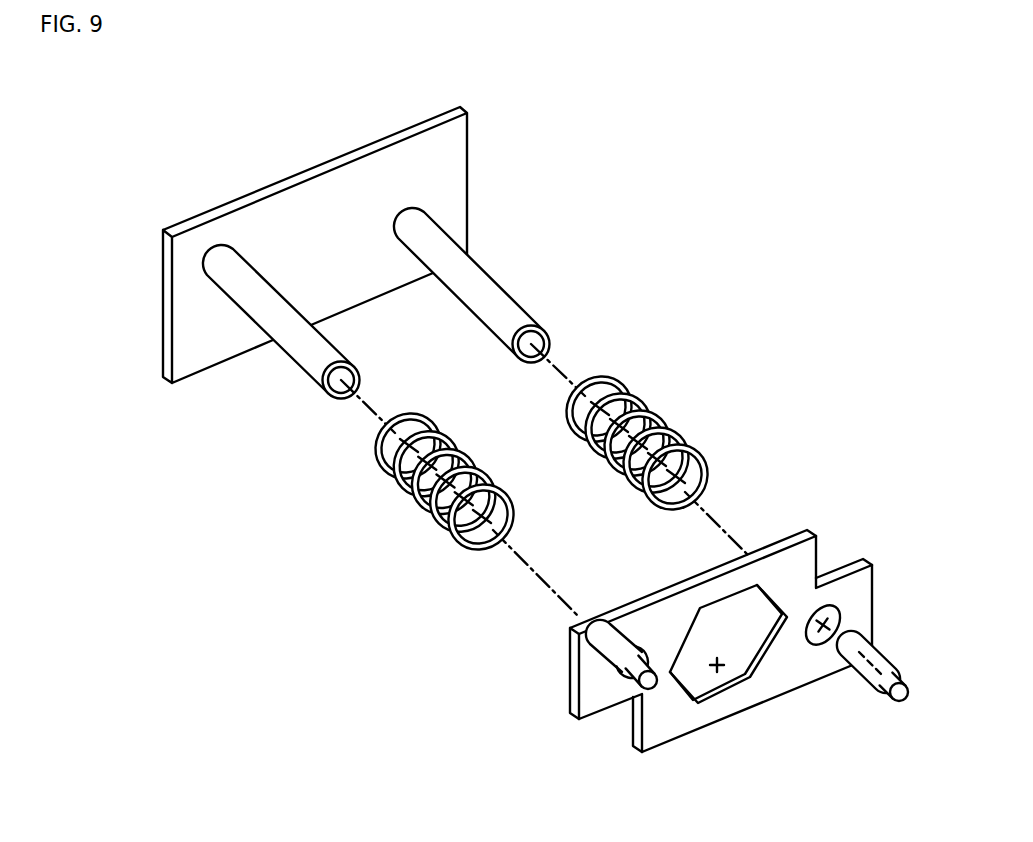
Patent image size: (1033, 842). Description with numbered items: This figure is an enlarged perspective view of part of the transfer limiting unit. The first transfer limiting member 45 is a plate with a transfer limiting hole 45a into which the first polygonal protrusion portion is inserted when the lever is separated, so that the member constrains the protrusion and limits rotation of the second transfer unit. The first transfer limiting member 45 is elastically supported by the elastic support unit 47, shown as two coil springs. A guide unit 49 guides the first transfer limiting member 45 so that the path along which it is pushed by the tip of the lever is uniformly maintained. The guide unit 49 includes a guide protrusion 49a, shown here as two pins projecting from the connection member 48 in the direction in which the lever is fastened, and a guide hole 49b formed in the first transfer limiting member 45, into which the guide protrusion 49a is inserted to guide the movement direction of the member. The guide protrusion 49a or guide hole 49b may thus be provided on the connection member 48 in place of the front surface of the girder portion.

The first transfer limiting member 45 is at (702, 630).
The transfer limiting hole 45a is at (724, 668).
The elastic support unit 47 is at (422, 508).
The connection member 48 is at (180, 316).
The guide unit 49 is at (505, 310).
The guide protrusion 49a is at (437, 303).
The guide hole 49b is at (836, 607).